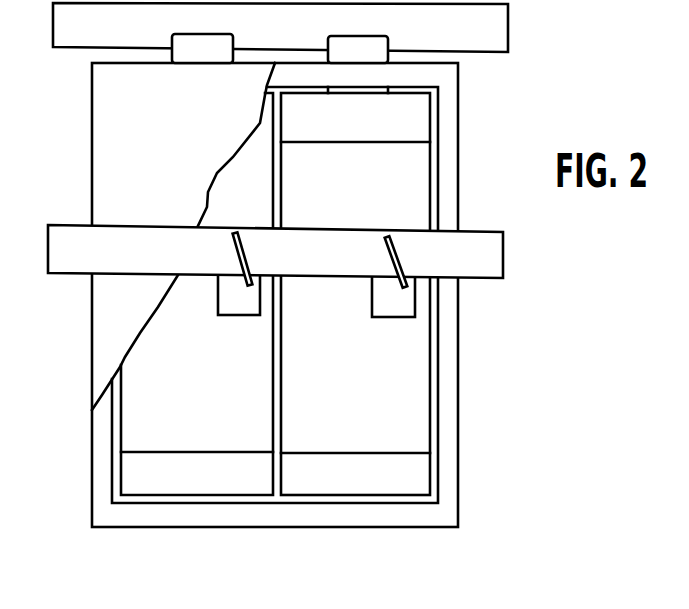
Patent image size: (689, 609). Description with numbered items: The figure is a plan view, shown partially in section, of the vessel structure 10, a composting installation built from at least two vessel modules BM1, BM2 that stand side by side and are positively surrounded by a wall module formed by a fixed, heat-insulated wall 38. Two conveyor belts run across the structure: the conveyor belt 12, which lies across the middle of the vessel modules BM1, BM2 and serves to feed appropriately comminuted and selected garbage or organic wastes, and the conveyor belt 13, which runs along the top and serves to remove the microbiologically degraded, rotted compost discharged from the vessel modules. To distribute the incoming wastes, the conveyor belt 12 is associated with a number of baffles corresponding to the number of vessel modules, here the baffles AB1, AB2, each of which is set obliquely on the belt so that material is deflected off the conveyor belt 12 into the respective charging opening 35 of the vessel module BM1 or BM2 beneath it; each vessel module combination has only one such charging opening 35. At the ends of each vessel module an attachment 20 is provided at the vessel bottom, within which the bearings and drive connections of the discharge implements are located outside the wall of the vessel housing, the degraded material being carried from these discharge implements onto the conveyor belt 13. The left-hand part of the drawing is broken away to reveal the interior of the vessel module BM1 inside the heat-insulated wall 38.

The vessel structure 10 is at (66, 373).
The conveyor belt 12 is at (490, 257).
The conveyor belt 13 is at (494, 37).
The attachment 20 is at (417, 117).
The charging opening 35 is at (243, 318).
The heat-insulated wall 38 is at (448, 372).
The baffle AB1 is at (237, 258).
The baffle AB2 is at (392, 257).
The vessel module BM1 is at (197, 294).
The vessel module BM2 is at (355, 294).